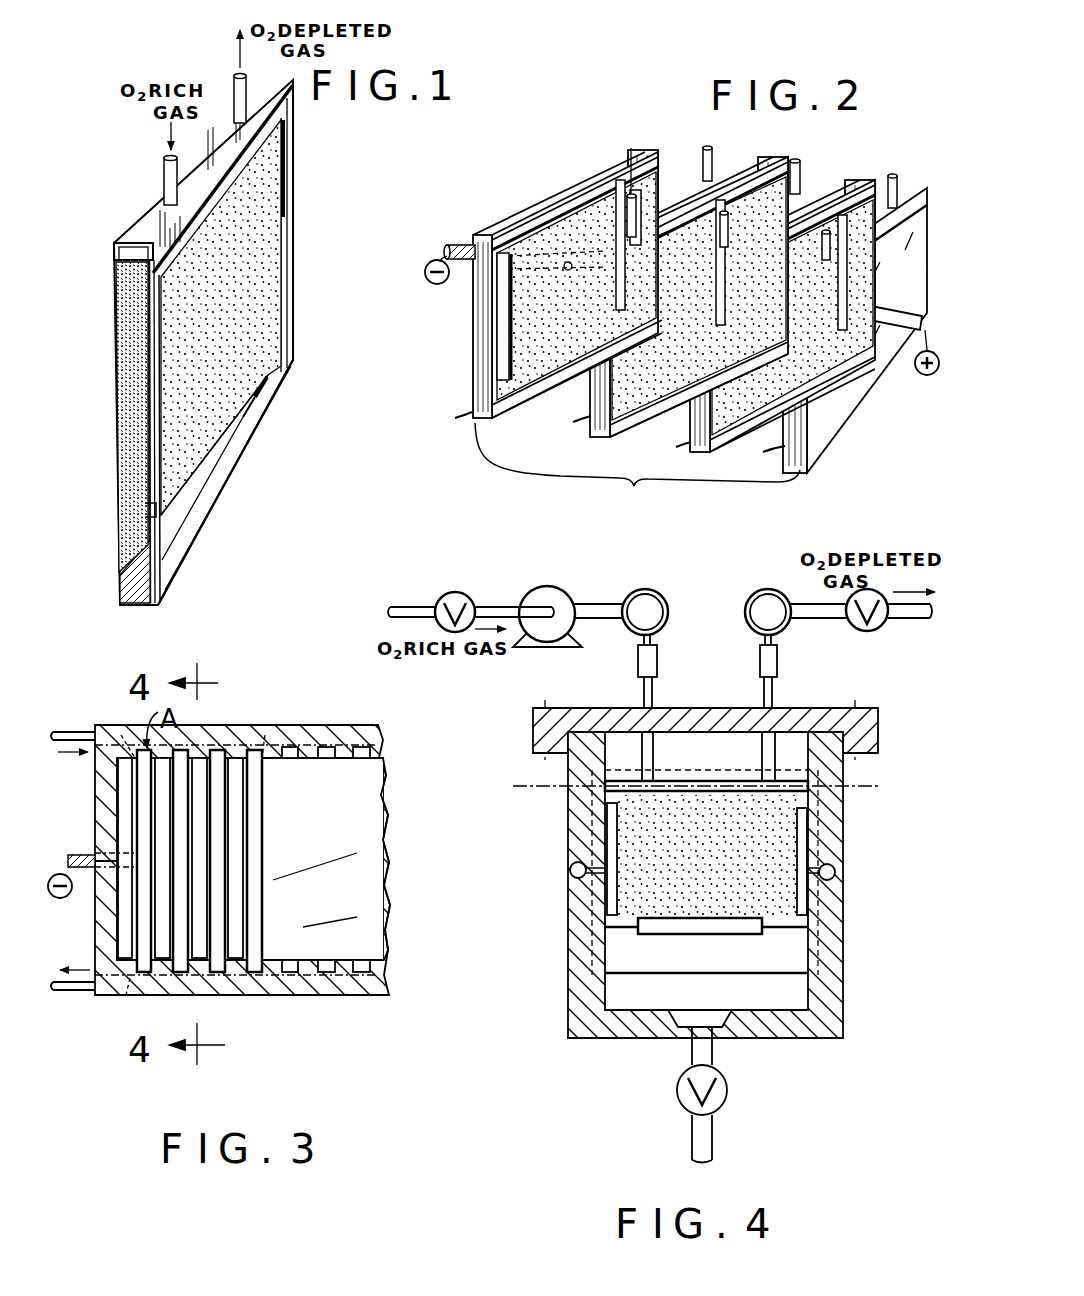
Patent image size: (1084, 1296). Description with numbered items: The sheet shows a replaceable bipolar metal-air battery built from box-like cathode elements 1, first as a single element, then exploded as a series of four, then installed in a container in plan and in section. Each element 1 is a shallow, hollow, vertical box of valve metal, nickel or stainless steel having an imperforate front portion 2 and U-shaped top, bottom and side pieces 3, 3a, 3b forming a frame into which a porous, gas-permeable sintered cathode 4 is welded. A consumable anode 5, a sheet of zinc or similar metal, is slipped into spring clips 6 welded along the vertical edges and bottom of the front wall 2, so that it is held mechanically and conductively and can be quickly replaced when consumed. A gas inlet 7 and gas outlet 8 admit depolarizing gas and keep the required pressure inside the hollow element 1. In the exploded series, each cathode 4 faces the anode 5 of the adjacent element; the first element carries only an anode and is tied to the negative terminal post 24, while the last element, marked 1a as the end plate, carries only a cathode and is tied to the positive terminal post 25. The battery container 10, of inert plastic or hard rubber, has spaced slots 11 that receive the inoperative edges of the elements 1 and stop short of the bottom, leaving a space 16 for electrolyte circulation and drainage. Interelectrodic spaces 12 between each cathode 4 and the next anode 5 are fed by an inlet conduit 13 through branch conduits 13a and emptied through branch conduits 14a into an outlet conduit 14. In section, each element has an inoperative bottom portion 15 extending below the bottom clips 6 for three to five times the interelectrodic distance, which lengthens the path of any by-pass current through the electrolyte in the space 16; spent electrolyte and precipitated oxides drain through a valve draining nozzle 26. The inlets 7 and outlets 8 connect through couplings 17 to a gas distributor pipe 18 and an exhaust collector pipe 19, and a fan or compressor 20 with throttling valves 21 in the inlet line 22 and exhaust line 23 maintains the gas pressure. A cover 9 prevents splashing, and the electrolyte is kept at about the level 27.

In FIG. 1, the box-like cathode element 1 is at (110, 258).
In FIG. 2, the box-like cathode element 1 is at (500, 216).
In FIG. 3, the box-like cathode element 1 is at (245, 975).
In FIG. 4, the box-like cathode element 1 is at (835, 800).
In FIG. 2, the end plate 1a is at (930, 190).
In FIG. 1, the imperforate front portion 2 is at (150, 517).
In FIG. 1, the U-shaped top piece 3 is at (284, 102).
In FIG. 1, the U-shaped bottom piece 3a is at (176, 568).
In FIG. 1, the U-shaped side piece 3b is at (292, 252).
In FIG. 1, the porous gas-permeable cathode 4 is at (124, 428).
In FIG. 2, the porous gas-permeable cathode 4 is at (602, 276).
In FIG. 3, the porous gas-permeable cathode 4 is at (212, 922).
In FIG. 1, the consumable anode 5 is at (245, 310).
In FIG. 2, the consumable anode 5 is at (522, 378).
In FIG. 3, the consumable anode 5 is at (208, 885).
In FIG. 4, the consumable anode 5 is at (700, 876).
In FIG. 1, the spring clips 6 is at (285, 212).
In FIG. 2, the spring clips 6 is at (478, 305).
In FIG. 4, the spring clips 6 is at (612, 828).
In FIG. 1, the gas inlet 7 is at (164, 166).
In FIG. 2, the gas inlet 7 is at (626, 216).
In FIG. 4, the gas inlet 7 is at (642, 693).
In FIG. 1, the gas outlet 8 is at (234, 88).
In FIG. 2, the gas outlet 8 is at (703, 152).
In FIG. 4, the gas outlet 8 is at (776, 690).
In FIG. 4, the cover 9 is at (718, 716).
In FIG. 3, the battery container 10 is at (376, 722).
In FIG. 4, the battery container 10 is at (560, 900).
In FIG. 3, the slots 11 is at (325, 748).
In FIG. 4, the slots 11 is at (592, 945).
In FIG. 3, the interelectrodic spaces 12 is at (196, 820).
In FIG. 3, the electrolyte inlet conduit 13 is at (124, 734).
In FIG. 4, the electrolyte inlet conduit 13 is at (836, 870).
In FIG. 3, the inlet branch conduit 13a is at (266, 735).
In FIG. 4, the inlet branch conduit 13a is at (820, 885).
In FIG. 3, the electrolyte outlet conduit 14 is at (132, 996).
In FIG. 4, the electrolyte outlet conduit 14 is at (570, 870).
In FIG. 3, the outlet branch conduit 14a is at (340, 965).
In FIG. 4, the outlet branch conduit 14a is at (595, 864).
In FIG. 4, the inoperative bottom portion 15 is at (752, 968).
In FIG. 4, the bottom space 16 is at (630, 992).
In FIG. 4, the couplings 17 is at (640, 662).
In FIG. 4, the gas distributor pipe 18 is at (652, 594).
In FIG. 4, the exhaust collector pipe 19 is at (752, 610).
In FIG. 4, the fan or compressor 20 is at (546, 603).
In FIG. 4, the throttling valves 21 is at (855, 628).
In FIG. 4, the inlet line 22 is at (496, 605).
In FIG. 4, the exhaust line 23 is at (902, 622).
In FIG. 2, the negative terminal post 24 is at (460, 245).
In FIG. 3, the negative terminal post 24 is at (75, 855).
In FIG. 2, the positive terminal post 25 is at (900, 325).
In FIG. 4, the valve draining nozzle 26 is at (712, 1062).
In FIG. 4, the electrolyte level 27 is at (532, 786).